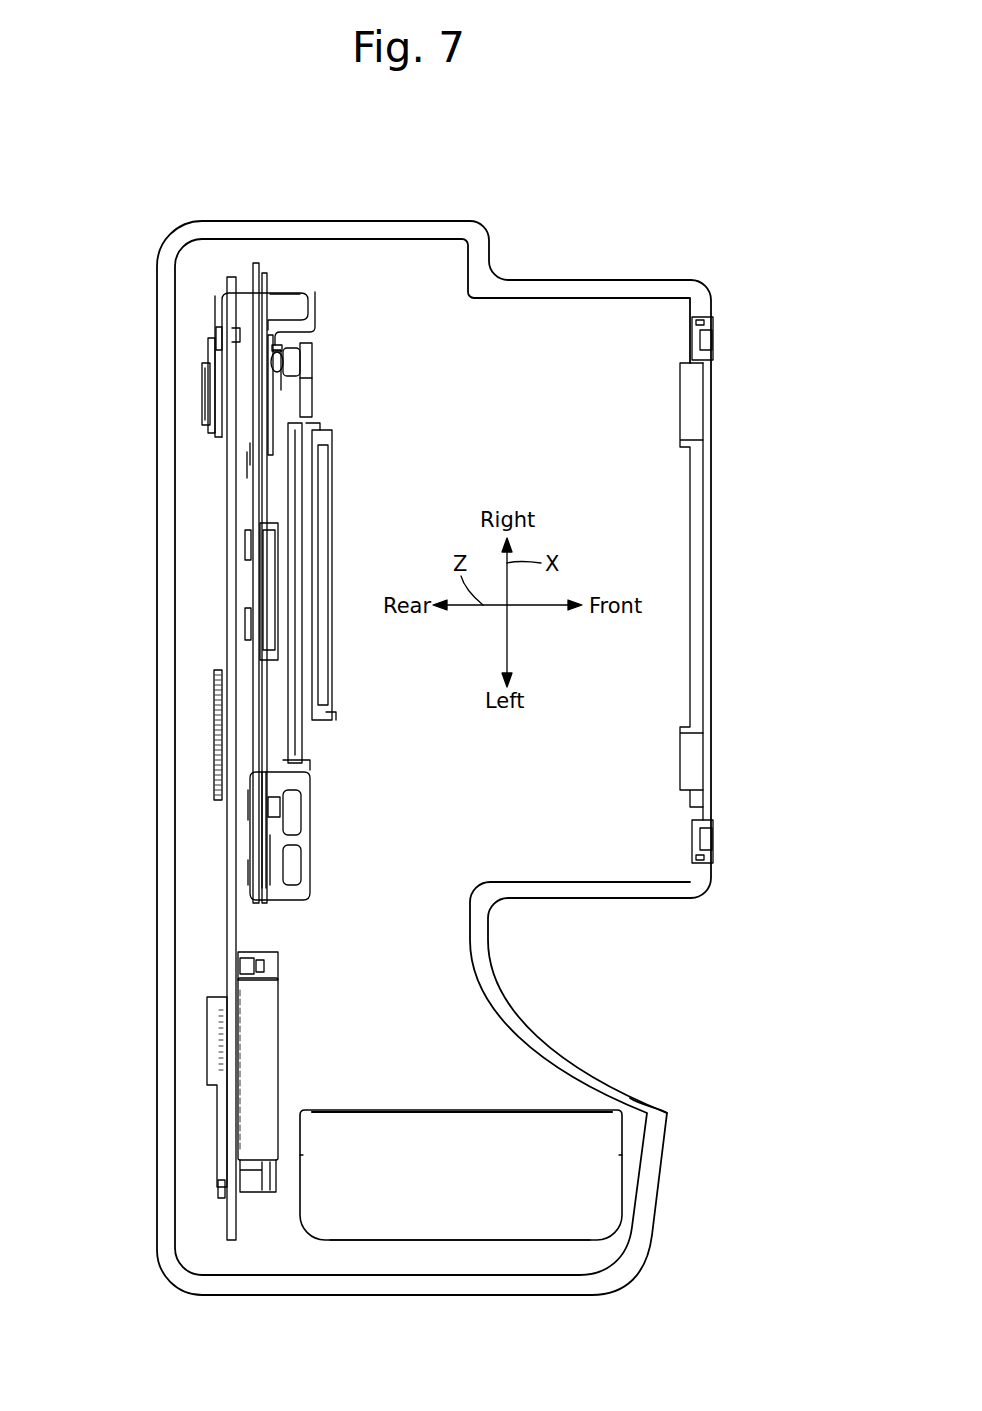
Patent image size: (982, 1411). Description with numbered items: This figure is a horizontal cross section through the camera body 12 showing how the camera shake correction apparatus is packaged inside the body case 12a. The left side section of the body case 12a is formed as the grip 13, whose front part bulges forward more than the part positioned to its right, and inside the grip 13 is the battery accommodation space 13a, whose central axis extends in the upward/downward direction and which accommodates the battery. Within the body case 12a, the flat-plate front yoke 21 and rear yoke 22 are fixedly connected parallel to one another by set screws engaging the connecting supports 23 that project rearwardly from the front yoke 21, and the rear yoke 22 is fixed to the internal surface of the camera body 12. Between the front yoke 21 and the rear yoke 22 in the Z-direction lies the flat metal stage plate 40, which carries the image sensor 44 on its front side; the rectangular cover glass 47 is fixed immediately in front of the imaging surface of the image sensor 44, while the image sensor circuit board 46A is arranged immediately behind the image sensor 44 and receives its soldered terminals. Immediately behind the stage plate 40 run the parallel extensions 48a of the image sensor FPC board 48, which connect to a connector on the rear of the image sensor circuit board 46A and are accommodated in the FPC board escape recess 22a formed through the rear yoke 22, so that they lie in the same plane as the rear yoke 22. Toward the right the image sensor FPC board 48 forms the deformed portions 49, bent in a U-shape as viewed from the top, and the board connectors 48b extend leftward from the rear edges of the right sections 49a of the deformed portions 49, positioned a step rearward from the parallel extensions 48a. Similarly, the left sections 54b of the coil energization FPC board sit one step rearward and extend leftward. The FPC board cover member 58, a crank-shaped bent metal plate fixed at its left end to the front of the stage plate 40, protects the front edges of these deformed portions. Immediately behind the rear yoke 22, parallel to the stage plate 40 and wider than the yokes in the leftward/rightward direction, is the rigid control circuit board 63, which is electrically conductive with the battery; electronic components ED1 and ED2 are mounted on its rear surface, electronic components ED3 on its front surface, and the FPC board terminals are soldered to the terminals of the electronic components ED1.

The camera body 12 is at (642, 290).
The body case 12a is at (570, 290).
The grip 13 is at (640, 1110).
The battery accommodation space 13a is at (420, 1128).
The front yoke 21 is at (306, 386).
The rear yoke 22 is at (256, 262).
The FPC board escape recess 22a is at (250, 453).
The connecting support 23 is at (297, 362).
The stage plate 40 is at (270, 390).
The image sensor 44 is at (298, 449).
The image sensor circuit board 46A is at (260, 589).
The cover glass 47 is at (333, 530).
The image sensor FPC board 48 is at (257, 562).
The parallel extensions 48a is at (248, 464).
The board connectors 48b is at (215, 313).
The deformed portion 49 is at (305, 293).
The right section 49a is at (285, 292).
The left sections 54b is at (208, 347).
The FPC board cover member 58 is at (313, 315).
The control circuit board 63 is at (224, 642).
The electronic components ED1 is at (210, 402).
The electronic components ED2 is at (222, 1030).
The electronic components ED3 is at (262, 1017).